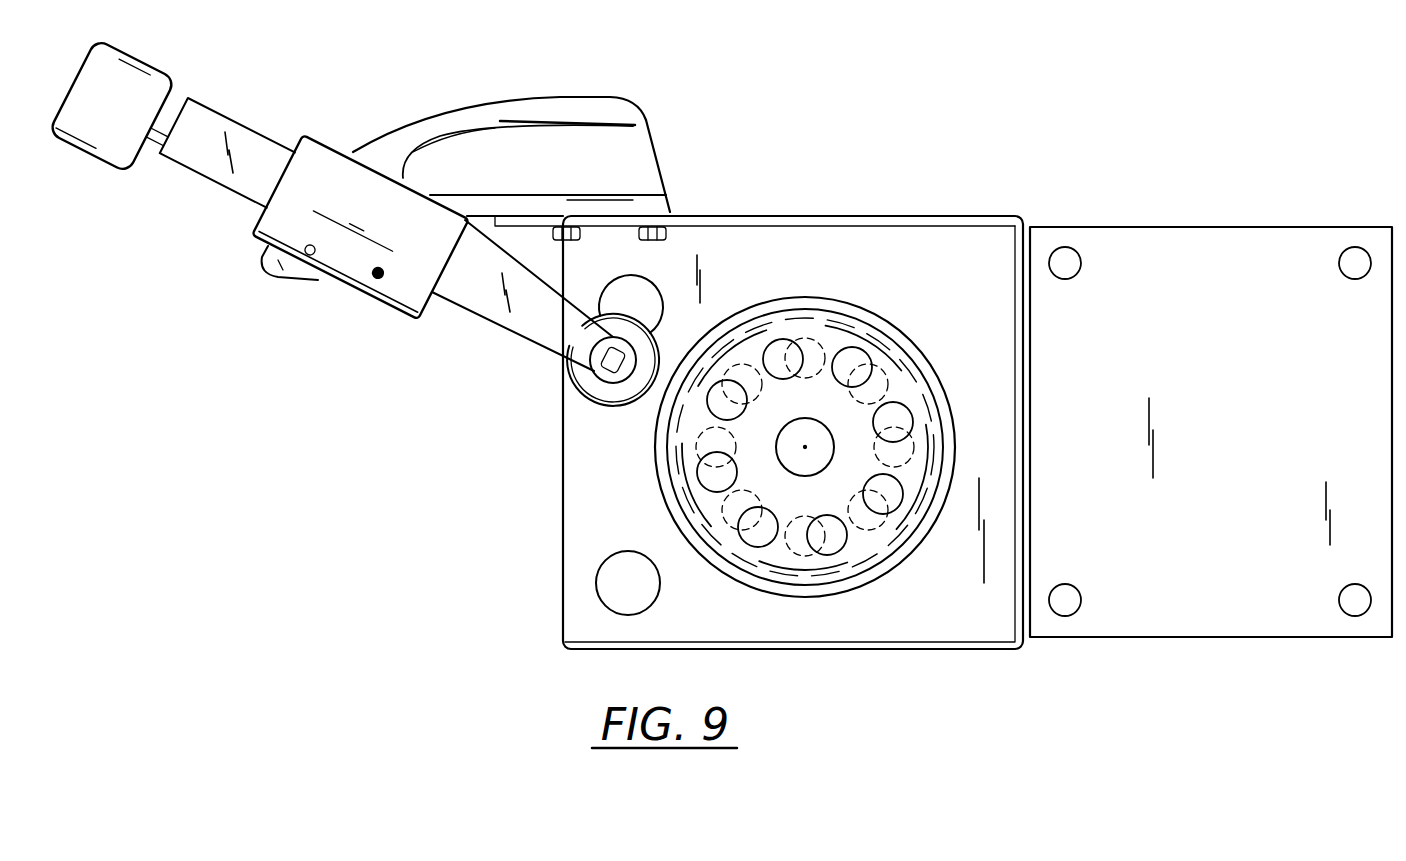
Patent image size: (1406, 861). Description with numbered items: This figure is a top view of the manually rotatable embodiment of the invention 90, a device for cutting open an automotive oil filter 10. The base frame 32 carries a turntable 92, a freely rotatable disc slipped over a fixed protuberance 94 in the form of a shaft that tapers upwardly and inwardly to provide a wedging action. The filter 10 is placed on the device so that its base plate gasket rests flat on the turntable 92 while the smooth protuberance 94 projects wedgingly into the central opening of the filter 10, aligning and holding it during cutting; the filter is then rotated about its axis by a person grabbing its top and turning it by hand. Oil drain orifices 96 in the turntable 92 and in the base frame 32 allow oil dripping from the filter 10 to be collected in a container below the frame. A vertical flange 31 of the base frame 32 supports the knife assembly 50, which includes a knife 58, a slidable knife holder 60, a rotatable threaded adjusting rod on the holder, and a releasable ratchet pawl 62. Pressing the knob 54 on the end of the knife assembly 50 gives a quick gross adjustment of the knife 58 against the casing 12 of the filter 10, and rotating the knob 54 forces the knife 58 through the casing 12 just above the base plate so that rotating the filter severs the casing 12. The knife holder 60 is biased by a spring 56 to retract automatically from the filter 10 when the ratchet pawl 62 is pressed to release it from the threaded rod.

The oil filter 10 is at (935, 410).
The casing 12 is at (933, 438).
The vertical flange 31 is at (738, 215).
The base frame 32 is at (565, 553).
The knife assembly 50 is at (485, 98).
The knob 54 is at (168, 70).
The spring 56 is at (303, 135).
The knife 58 is at (597, 410).
The knife holder 60 is at (240, 120).
The ratchet pawl 62 is at (287, 280).
The manually rotatable embodiment 90 is at (1019, 203).
The turntable 92 is at (885, 325).
The protuberance 94 is at (783, 443).
The oil drain orifices 96 is at (841, 540).